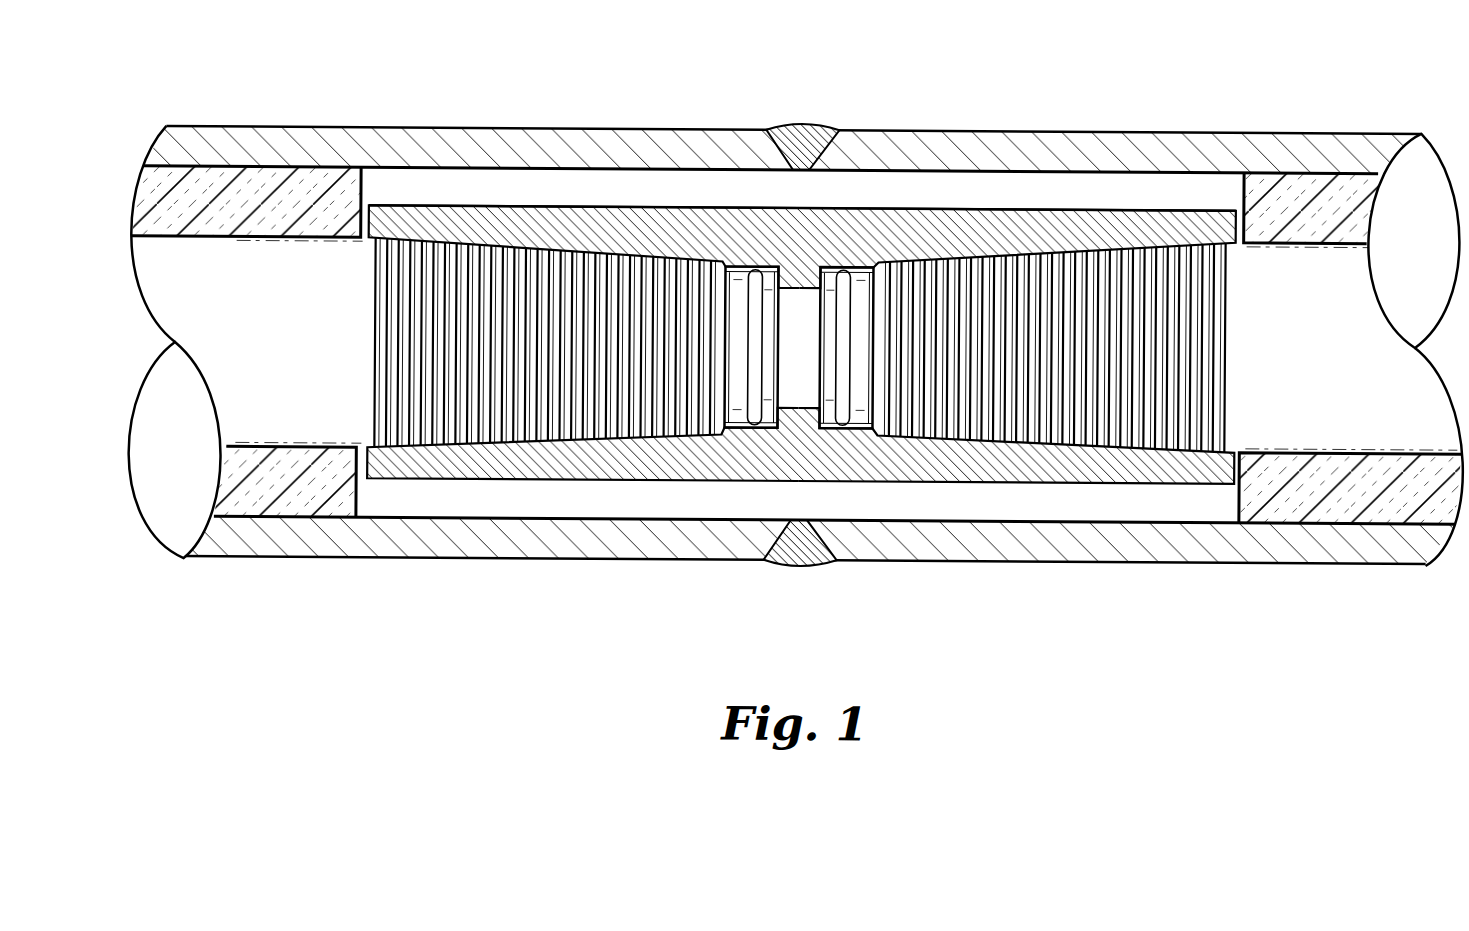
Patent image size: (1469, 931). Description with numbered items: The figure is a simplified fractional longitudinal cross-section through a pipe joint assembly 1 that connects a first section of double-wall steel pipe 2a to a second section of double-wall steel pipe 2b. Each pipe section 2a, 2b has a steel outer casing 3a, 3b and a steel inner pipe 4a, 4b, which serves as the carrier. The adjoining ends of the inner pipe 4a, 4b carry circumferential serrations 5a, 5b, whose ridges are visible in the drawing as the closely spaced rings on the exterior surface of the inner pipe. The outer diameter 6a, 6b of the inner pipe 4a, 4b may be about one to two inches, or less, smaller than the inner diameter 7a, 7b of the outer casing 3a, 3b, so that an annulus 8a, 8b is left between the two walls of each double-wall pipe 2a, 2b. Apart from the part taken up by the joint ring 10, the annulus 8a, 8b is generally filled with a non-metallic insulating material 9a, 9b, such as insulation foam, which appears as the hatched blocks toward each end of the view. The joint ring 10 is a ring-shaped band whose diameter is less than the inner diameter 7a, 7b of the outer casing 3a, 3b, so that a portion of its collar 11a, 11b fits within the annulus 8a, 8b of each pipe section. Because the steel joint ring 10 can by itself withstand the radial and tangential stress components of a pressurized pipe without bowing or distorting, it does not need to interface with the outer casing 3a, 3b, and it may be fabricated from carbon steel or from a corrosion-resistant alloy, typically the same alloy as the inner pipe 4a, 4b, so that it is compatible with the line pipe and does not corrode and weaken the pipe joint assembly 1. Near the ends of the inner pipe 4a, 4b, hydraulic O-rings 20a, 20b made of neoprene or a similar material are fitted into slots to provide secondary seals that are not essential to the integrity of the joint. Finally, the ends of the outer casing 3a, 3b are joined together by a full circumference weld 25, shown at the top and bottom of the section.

The pipe joint assembly 1 is at (1098, 20).
The first section of double-wall steel pipe 2a is at (495, 595).
The second section of double-wall steel pipe 2b is at (1122, 594).
The steel outer casing 3a is at (165, 204).
The steel outer casing 3b is at (1364, 146).
The steel inner pipe 4a is at (247, 276).
The steel inner pipe 4b is at (1253, 290).
The circumferential serrations 5a is at (600, 444).
The circumferential serrations 5b is at (993, 444).
The outer diameter of the steel inner pipe 6a is at (293, 236).
The outer diameter of the steel inner pipe 6b is at (1313, 197).
The inner diameter of the steel outer casing 7a is at (463, 194).
The inner diameter of the steel outer casing 7b is at (1100, 188).
The annulus 8a is at (495, 182).
The annulus 8b is at (1142, 184).
The insulating material 9a is at (153, 166).
The insulating material 9b is at (1310, 202).
The joint ring 10 is at (854, 186).
The collar 11a is at (557, 208).
The collar 11b is at (994, 204).
The hydraulic O-ring 20a is at (752, 311).
The hydraulic O-ring 20b is at (858, 298).
The full circumference weld 25 is at (797, 122).